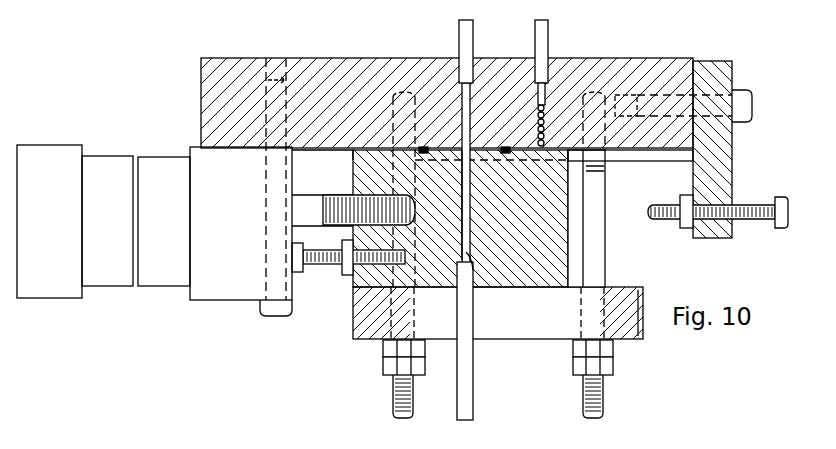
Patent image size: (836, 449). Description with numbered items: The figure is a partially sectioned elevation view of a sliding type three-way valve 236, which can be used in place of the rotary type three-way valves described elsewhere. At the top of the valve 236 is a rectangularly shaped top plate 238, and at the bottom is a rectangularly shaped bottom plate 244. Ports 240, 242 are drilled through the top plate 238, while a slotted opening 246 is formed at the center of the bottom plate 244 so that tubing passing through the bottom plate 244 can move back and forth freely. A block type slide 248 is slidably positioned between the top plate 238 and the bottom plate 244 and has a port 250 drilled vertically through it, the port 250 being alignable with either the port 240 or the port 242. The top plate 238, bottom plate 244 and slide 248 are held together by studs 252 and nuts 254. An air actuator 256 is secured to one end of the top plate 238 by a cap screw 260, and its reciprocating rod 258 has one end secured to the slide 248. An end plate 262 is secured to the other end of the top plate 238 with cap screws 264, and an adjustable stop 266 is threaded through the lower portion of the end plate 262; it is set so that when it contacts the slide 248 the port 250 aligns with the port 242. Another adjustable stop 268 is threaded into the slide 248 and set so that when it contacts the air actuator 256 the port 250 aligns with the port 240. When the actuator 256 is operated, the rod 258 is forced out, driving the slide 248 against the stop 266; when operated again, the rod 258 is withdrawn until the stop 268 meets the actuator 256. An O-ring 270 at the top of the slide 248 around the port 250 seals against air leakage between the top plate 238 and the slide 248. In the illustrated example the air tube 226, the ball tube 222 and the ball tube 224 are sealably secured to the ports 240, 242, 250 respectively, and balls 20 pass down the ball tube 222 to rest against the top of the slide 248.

The balls 20 is at (580, 68).
The ball tube 222 is at (548, 30).
The ball tube 224 is at (468, 397).
The air tube 226 is at (459, 39).
The sliding type three-way valve 236 is at (192, 378).
The top plate 238 is at (313, 57).
The port 240 is at (468, 90).
The port 242 is at (547, 92).
The bottom plate 244 is at (622, 338).
The slotted opening 246 is at (518, 338).
The slide 248 is at (560, 252).
The port 250 is at (466, 252).
The studs 252 is at (393, 398).
The nuts 254 is at (383, 364).
The air actuator 256 is at (68, 298).
The reciprocating rod 258 is at (305, 195).
The cap screw 260 is at (260, 311).
The end plate 262 is at (735, 160).
The cap screws 264 is at (737, 94).
The adjustable stop 266 is at (742, 221).
The adjustable stop 268 is at (318, 268).
The O-ring 270 is at (507, 147).